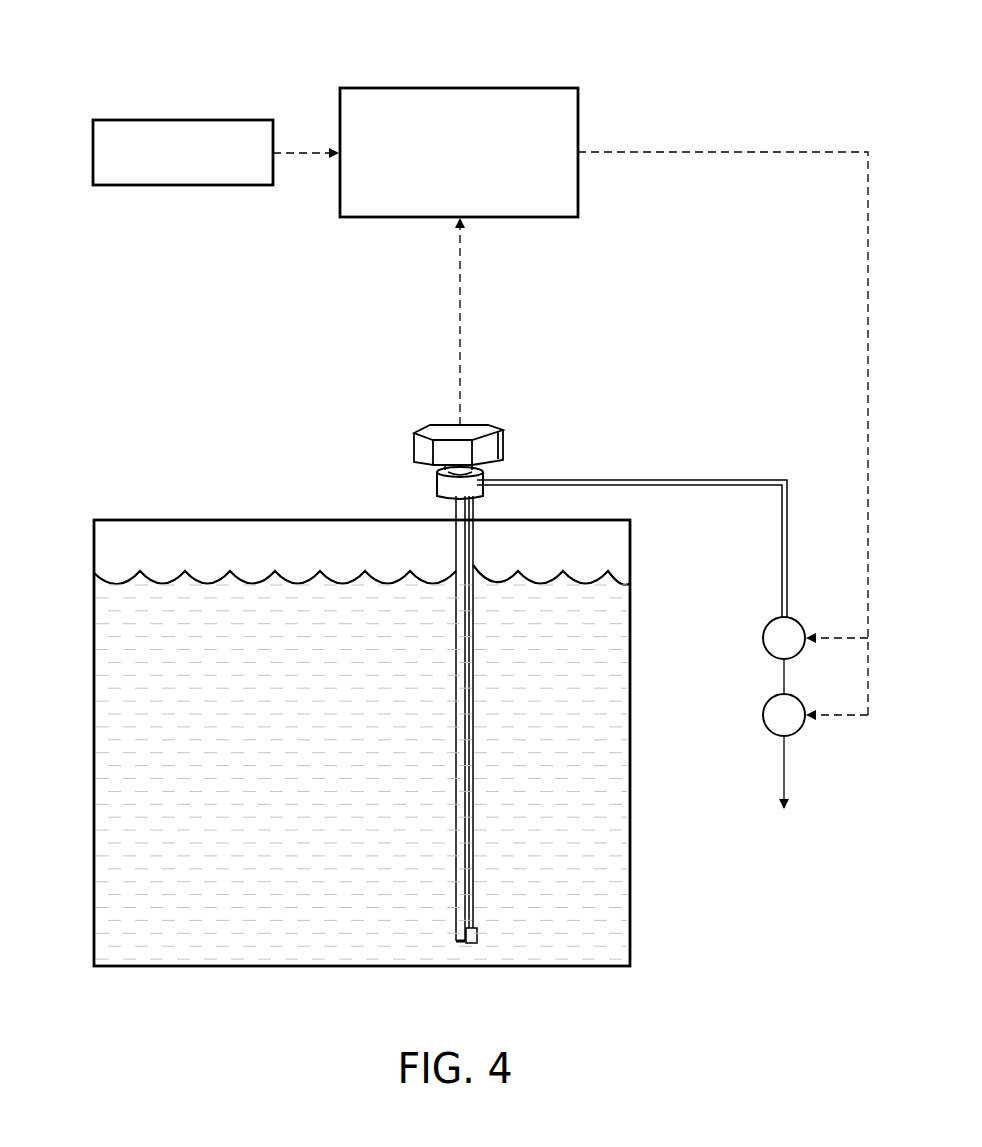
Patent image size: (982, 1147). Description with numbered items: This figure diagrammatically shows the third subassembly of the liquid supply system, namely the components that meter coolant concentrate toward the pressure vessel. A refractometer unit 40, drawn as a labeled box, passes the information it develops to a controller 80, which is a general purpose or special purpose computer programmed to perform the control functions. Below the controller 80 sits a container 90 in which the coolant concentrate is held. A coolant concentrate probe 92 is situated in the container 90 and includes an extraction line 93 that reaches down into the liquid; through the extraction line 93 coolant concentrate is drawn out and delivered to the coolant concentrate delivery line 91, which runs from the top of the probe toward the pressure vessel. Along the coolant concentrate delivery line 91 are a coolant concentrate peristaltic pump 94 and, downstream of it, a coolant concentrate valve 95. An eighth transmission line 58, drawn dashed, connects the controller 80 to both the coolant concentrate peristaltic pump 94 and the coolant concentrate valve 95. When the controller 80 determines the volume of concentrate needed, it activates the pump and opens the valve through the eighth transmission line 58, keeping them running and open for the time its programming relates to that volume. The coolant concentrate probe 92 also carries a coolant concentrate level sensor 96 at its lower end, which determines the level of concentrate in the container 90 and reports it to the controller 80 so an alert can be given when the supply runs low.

The refractometer unit 40 is at (185, 119).
The controller 80 is at (459, 87).
The eighth transmission line 58 is at (725, 151).
The container 90 is at (94, 750).
The coolant concentrate delivery line 91 is at (632, 479).
The coolant concentrate probe 92 is at (515, 416).
The extraction line 93 is at (478, 558).
The coolant concentrate peristaltic pump 94 is at (764, 640).
The coolant concentrate valve 95 is at (764, 717).
The coolant concentrate level sensor 96 is at (455, 921).